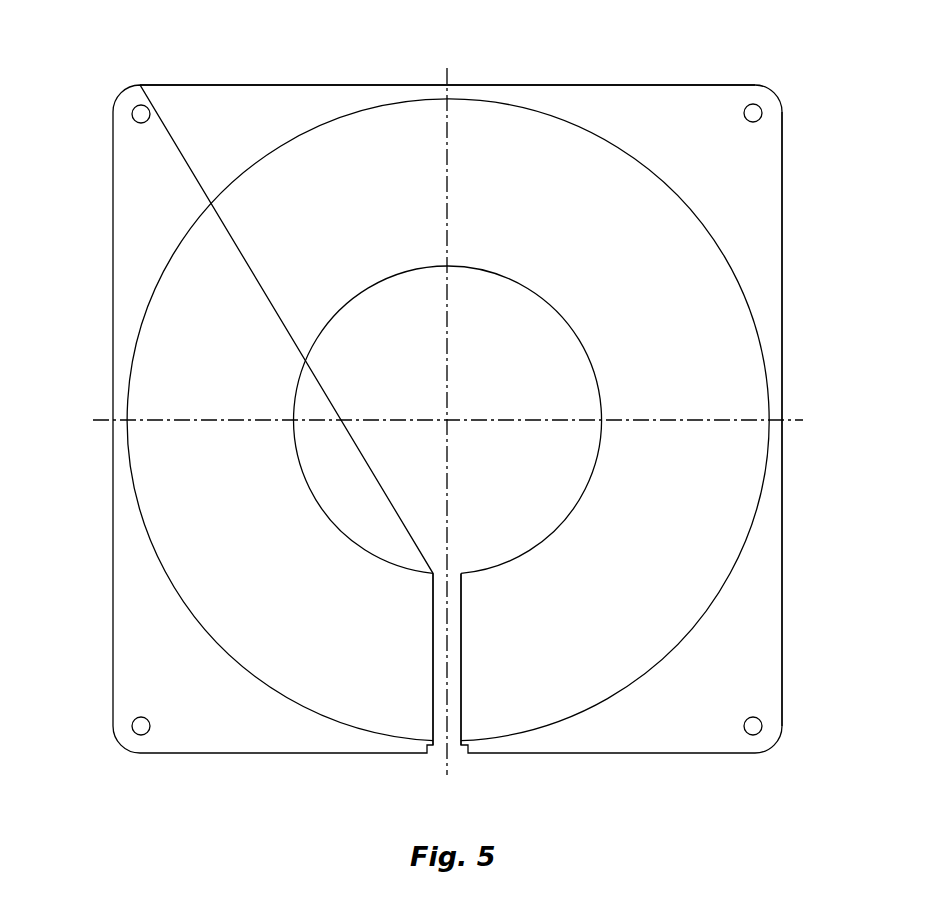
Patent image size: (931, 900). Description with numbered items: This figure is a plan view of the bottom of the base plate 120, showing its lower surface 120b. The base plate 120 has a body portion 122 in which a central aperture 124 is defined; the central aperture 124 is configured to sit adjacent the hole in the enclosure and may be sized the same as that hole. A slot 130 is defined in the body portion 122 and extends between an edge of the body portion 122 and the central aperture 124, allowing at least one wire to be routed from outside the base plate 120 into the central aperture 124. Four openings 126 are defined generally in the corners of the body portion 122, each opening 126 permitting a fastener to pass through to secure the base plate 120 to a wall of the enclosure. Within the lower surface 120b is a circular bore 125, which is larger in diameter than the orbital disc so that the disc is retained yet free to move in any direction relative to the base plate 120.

The base plate 120 is at (174, 64).
The lower surface 120b is at (743, 666).
The body portion 122 is at (219, 113).
The central aperture 124 is at (485, 297).
The bore 125 is at (713, 473).
The opening 126 is at (132, 114).
The slot 130 is at (453, 664).